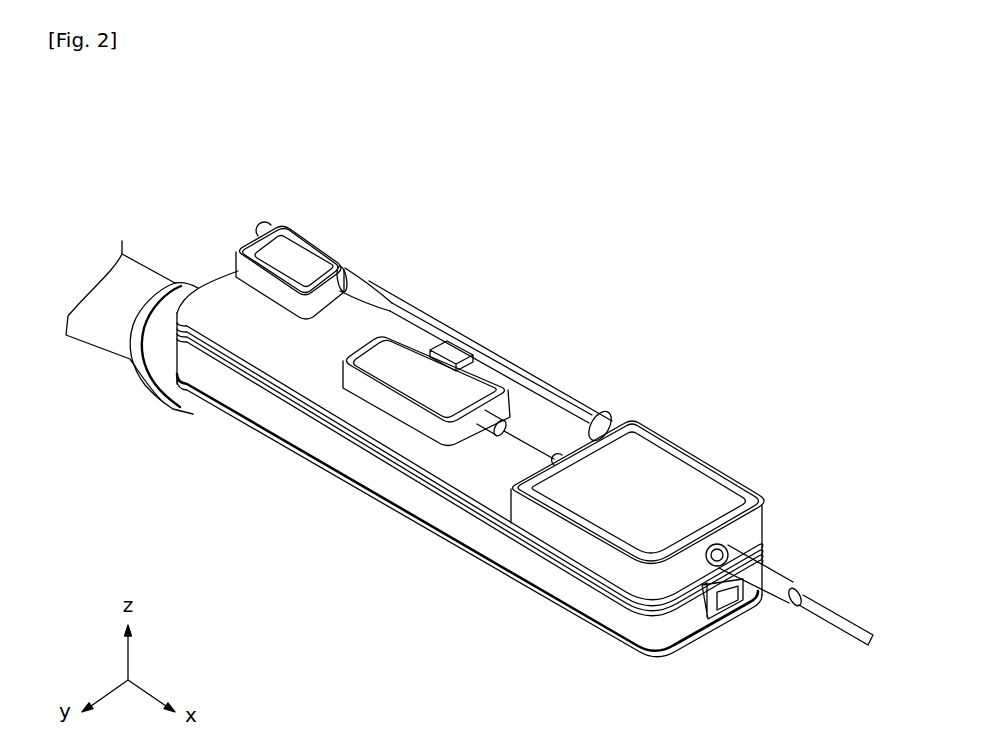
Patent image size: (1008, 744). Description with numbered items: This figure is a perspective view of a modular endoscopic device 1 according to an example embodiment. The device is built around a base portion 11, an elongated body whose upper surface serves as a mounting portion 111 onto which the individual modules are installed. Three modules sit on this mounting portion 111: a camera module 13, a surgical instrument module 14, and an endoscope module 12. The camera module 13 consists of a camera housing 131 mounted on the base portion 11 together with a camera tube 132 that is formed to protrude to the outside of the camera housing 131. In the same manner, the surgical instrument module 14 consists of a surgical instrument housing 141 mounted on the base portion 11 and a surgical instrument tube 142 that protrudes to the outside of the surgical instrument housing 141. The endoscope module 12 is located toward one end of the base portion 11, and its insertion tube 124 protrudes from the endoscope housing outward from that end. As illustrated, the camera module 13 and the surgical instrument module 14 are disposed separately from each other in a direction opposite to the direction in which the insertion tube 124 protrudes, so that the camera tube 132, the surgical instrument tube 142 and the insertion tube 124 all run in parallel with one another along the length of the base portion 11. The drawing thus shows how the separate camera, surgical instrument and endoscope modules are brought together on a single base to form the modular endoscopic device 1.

The modular endoscopic device 1 is at (68, 130).
The base portion 11 is at (428, 566).
The mounting portion 111 is at (288, 378).
The endoscope module 12 is at (701, 444).
The insertion tube 124 is at (832, 617).
The camera module 13 is at (327, 231).
The camera housing 131 is at (288, 242).
The camera tube 132 is at (427, 323).
The surgical instrument module 14 is at (499, 372).
The surgical instrument housing 141 is at (400, 405).
The surgical instrument tube 142 is at (530, 440).